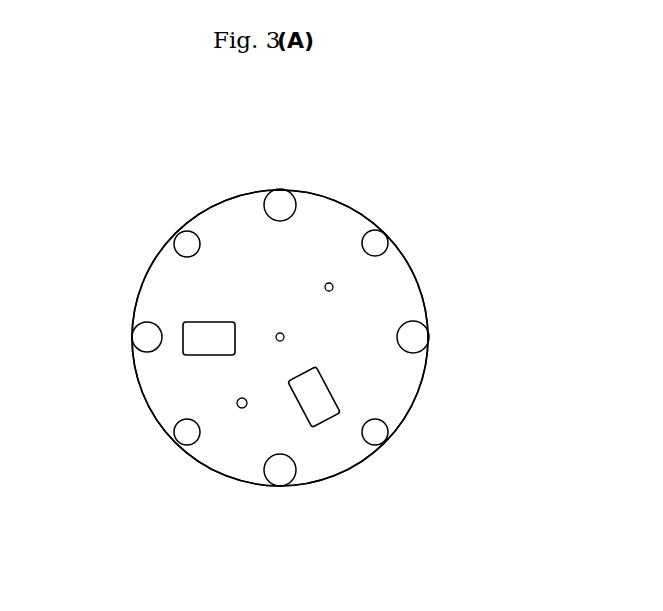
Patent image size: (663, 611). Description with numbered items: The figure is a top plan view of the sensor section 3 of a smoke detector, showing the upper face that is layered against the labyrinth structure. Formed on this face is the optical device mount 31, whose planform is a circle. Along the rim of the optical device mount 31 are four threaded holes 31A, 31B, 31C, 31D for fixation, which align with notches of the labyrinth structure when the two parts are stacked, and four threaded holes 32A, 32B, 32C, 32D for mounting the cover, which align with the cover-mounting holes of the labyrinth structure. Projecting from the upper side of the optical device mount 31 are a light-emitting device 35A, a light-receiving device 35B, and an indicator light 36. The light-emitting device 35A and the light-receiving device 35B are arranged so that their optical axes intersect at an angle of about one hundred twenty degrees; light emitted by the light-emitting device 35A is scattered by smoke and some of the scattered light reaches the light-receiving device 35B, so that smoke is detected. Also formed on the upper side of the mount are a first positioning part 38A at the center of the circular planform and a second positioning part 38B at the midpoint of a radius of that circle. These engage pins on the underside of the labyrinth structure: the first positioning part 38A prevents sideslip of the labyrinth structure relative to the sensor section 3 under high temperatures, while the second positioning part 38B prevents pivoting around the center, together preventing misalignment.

The sensor section 3 is at (130, 122).
The optical device mount 31 is at (415, 270).
The threaded hole for fixation 31A is at (280, 202).
The threaded hole for fixation 31B is at (150, 340).
The threaded hole for fixation 31C is at (280, 474).
The threaded hole for fixation 31D is at (418, 338).
The threaded hole for mounting the cover 32A is at (190, 246).
The threaded hole for mounting the cover 32B is at (188, 434).
The threaded hole for mounting the cover 32C is at (377, 434).
The threaded hole for mounting the cover 32D is at (377, 242).
The light-emitting device 35A is at (200, 352).
The light-receiving device 35B is at (327, 413).
The indicator light 36 is at (242, 408).
The first positioning part 38A is at (283, 340).
The second positioning part 38B is at (329, 283).